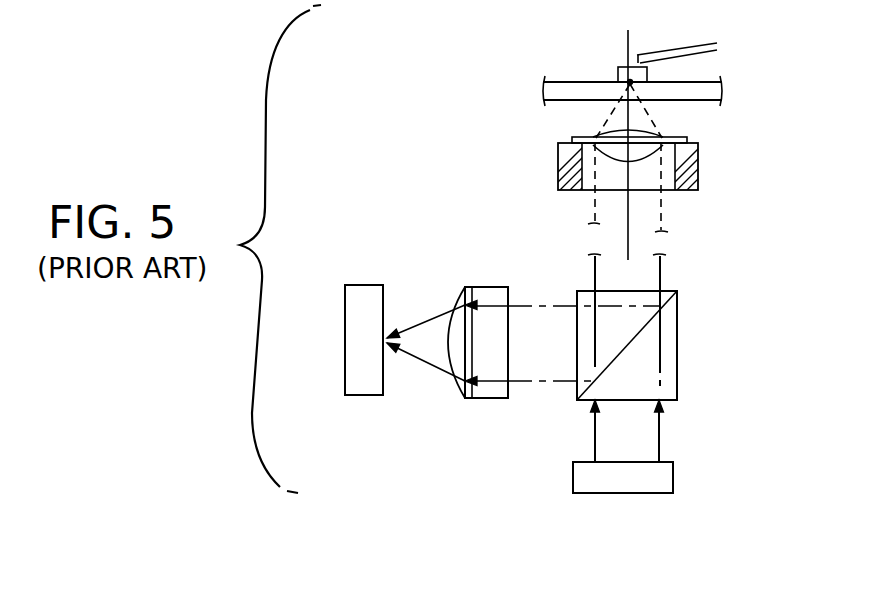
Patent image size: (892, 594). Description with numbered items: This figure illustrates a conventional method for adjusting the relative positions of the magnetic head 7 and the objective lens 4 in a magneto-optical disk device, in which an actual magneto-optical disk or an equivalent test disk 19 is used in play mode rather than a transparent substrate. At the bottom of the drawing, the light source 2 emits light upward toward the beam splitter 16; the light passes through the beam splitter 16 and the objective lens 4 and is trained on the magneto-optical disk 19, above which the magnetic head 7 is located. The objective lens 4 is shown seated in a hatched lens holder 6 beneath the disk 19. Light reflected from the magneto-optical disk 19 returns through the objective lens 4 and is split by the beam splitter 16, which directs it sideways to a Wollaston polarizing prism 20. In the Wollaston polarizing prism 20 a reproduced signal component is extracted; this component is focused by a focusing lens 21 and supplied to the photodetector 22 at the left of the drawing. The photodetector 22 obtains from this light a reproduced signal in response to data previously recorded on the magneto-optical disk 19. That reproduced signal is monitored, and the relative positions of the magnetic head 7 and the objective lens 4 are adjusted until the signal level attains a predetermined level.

The light source 2 is at (625, 483).
The objective lens 4 is at (600, 134).
The lens holder 6 is at (698, 173).
The magnetic head 7 is at (618, 68).
The beam splitter 16 is at (678, 339).
The magneto-optical disk 19 is at (725, 92).
The Wollaston polarizing prism 20 is at (490, 392).
The focusing lens 21 is at (458, 390).
The photodetector 22 is at (357, 358).